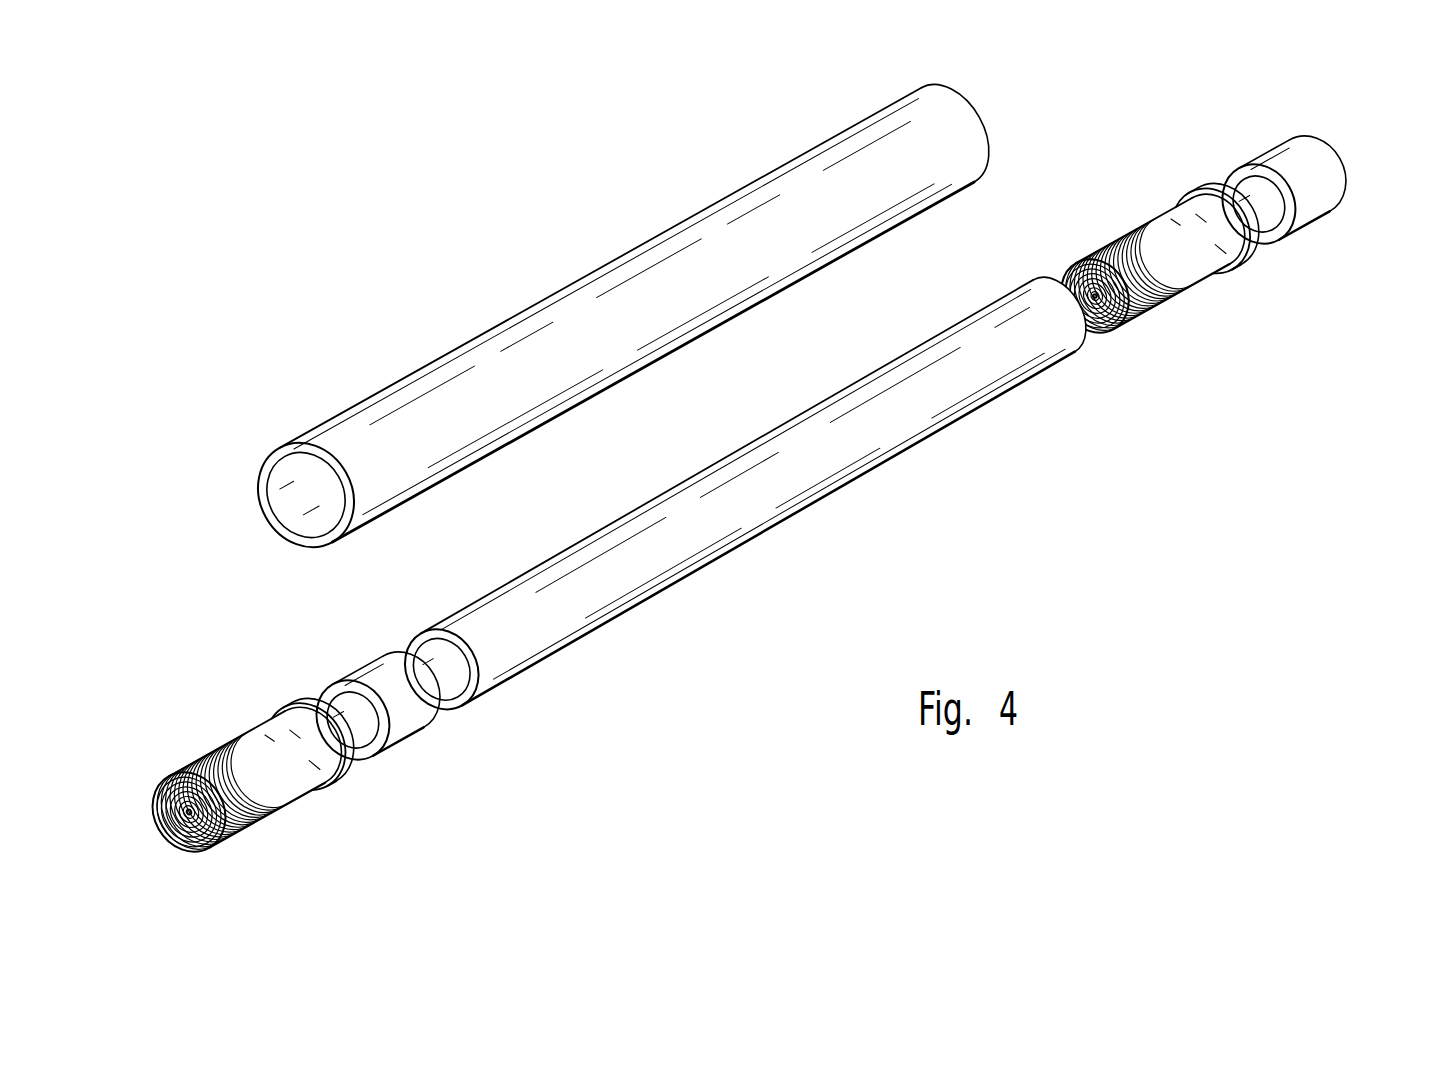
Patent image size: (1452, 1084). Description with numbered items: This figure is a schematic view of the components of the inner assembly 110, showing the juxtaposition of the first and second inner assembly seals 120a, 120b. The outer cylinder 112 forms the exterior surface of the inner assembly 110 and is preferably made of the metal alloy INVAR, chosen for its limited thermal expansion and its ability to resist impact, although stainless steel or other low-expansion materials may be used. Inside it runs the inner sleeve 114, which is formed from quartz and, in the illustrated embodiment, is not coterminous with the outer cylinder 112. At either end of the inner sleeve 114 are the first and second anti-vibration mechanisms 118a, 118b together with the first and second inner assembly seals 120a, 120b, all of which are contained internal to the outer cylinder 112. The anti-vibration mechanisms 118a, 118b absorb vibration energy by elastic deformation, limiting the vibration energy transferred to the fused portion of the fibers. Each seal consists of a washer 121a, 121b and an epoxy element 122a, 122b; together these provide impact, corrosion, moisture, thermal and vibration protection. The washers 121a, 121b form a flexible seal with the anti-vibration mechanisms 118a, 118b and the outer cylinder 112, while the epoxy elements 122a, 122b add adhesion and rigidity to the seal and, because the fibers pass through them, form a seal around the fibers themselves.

The inner assembly 110 is at (538, 177).
The outer cylinder 112 is at (965, 141).
The inner sleeve 114 is at (793, 475).
The first anti-vibration mechanism 118a is at (385, 722).
The second anti-vibration mechanism 118b is at (1170, 300).
The first inner assembly seal 120a is at (323, 782).
The second inner assembly seal 120b is at (1232, 267).
The washer 121a is at (347, 760).
The washer 121b is at (1240, 250).
The epoxy element 122a is at (262, 826).
The epoxy element 122b is at (1292, 204).